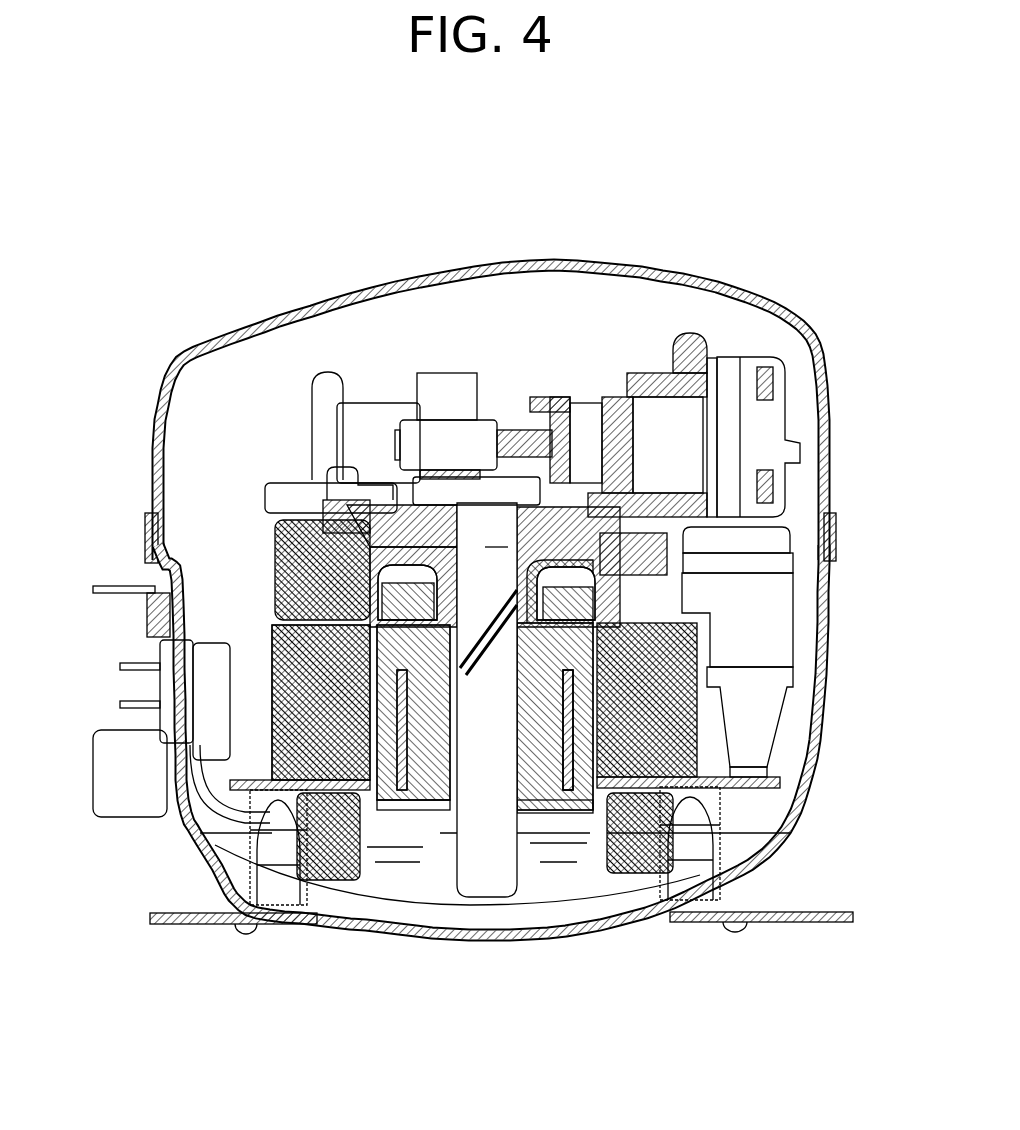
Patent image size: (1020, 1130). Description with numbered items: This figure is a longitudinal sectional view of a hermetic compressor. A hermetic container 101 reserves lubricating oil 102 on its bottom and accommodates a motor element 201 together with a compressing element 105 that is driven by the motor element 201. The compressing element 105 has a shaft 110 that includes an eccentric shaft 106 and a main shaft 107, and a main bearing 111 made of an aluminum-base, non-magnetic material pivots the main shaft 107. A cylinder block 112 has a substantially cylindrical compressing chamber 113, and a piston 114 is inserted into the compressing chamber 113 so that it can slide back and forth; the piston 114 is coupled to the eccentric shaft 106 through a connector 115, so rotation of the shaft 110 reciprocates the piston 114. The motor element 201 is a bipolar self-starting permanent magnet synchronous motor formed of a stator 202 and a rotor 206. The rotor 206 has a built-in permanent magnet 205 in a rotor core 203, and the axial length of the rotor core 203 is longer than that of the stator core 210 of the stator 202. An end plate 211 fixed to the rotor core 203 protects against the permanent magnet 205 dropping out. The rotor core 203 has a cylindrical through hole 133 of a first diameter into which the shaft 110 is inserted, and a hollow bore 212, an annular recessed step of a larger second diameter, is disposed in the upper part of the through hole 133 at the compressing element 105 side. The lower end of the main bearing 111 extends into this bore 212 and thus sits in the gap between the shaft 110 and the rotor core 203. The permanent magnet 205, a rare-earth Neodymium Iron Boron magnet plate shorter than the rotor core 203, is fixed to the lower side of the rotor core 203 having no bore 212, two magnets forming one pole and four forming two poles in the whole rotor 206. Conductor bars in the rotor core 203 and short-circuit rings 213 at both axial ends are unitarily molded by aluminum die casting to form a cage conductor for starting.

The hermetic container 101 is at (193, 355).
The lubricating oil 102 is at (375, 902).
The compressing element 105 is at (643, 370).
The eccentric shaft 106 is at (438, 403).
The main shaft 107 is at (680, 525).
The shaft 110 is at (535, 755).
The main bearing 111 is at (323, 497).
The cylinder block 112 is at (690, 337).
The compressing chamber 113 is at (715, 355).
The piston 114 is at (630, 452).
The connector 115 is at (520, 400).
The through hole 133 is at (483, 737).
The motor element 201 is at (272, 723).
The stator 202 is at (270, 627).
The rotor core 203 is at (720, 792).
The permanent magnet 205 is at (560, 692).
The rotor 206 is at (600, 655).
The stator core 210 is at (357, 693).
The end plate 211 is at (405, 800).
The hollow bore 212 is at (403, 620).
The short-circuit ring 213 is at (605, 770).